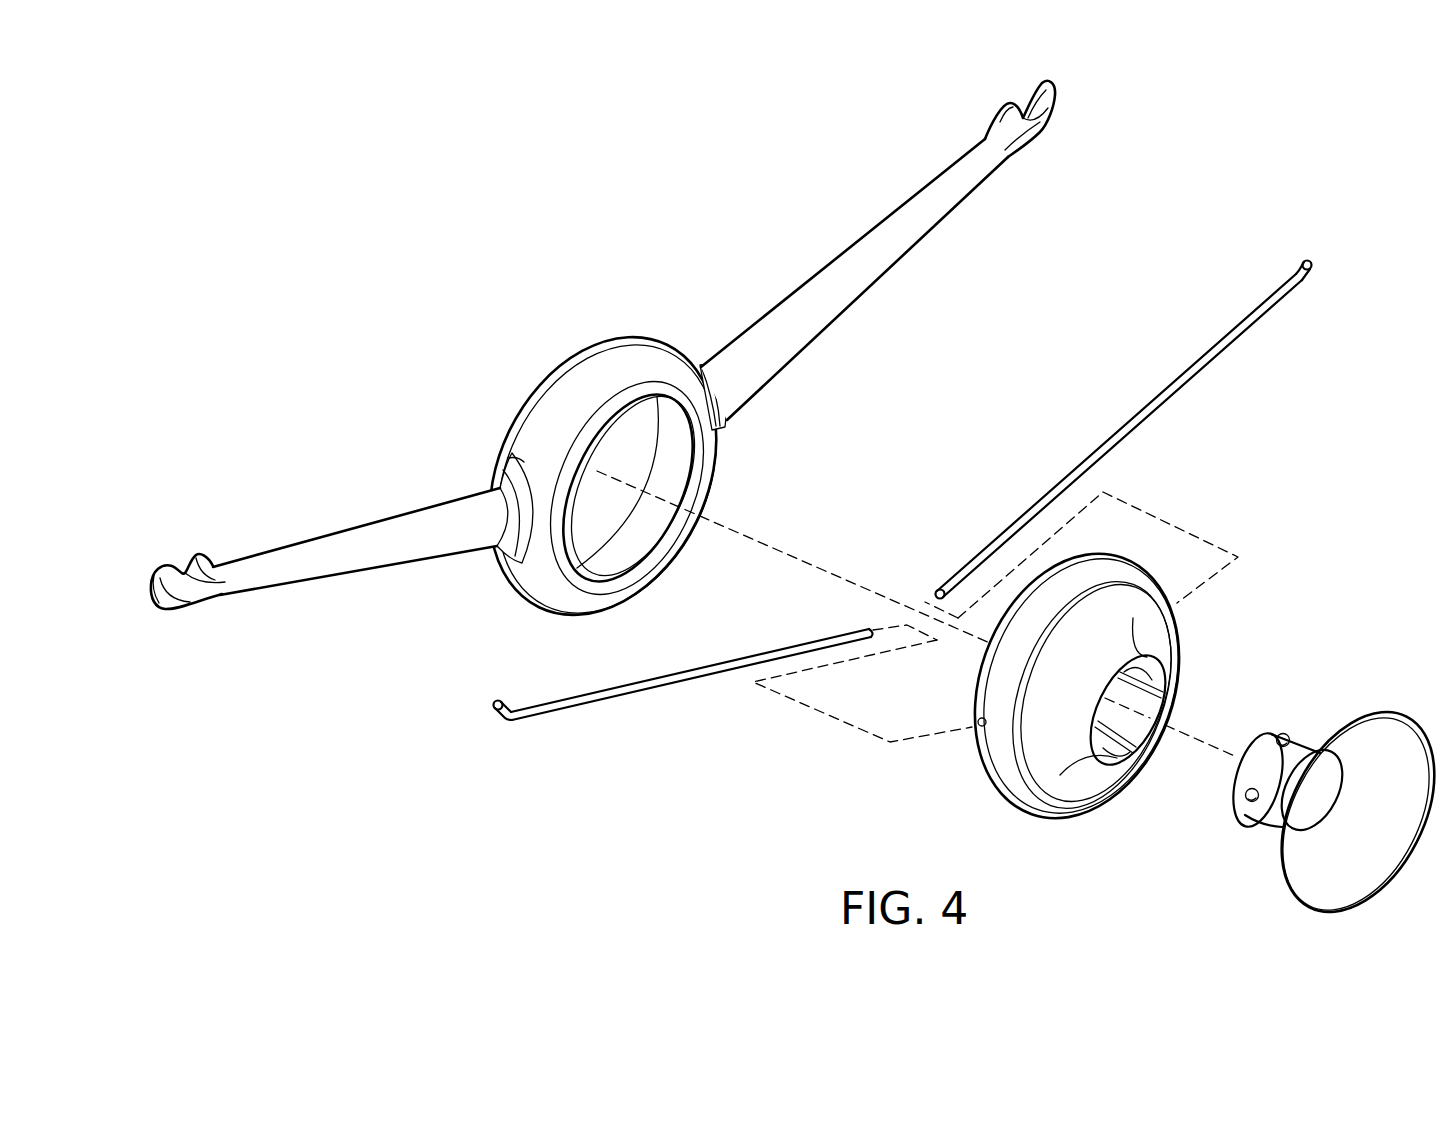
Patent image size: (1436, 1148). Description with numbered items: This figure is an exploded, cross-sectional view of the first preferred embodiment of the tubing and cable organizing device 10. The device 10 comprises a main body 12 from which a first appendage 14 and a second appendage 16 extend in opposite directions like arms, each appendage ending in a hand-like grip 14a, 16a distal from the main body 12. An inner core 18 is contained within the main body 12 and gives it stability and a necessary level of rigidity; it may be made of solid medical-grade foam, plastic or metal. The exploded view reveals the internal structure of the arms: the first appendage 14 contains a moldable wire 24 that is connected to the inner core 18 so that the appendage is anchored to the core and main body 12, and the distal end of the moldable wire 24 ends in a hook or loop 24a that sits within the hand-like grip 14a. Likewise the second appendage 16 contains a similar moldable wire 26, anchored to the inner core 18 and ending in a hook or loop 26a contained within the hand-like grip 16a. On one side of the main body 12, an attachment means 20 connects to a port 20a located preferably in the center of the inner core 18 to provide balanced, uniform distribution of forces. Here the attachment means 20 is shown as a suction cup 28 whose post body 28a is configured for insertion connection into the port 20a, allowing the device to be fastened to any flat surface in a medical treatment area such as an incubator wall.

The tubing and cable organizing device 10 is at (484, 343).
The main body 12 is at (561, 369).
The first appendage 14 is at (398, 514).
The hand-like grip 14a is at (161, 566).
The second appendage 16 is at (810, 277).
The hand-like grip 16a is at (1030, 93).
The inner core 18 is at (1033, 807).
The attachment means 20 is at (1329, 799).
The port 20a is at (1118, 762).
The moldable wire 24 is at (626, 699).
The hook or loop 24a is at (499, 720).
The moldable wire 26 is at (1186, 388).
The hook or loop 26a is at (1308, 284).
The suction cup 28 is at (1358, 908).
The post body 28a is at (1252, 740).